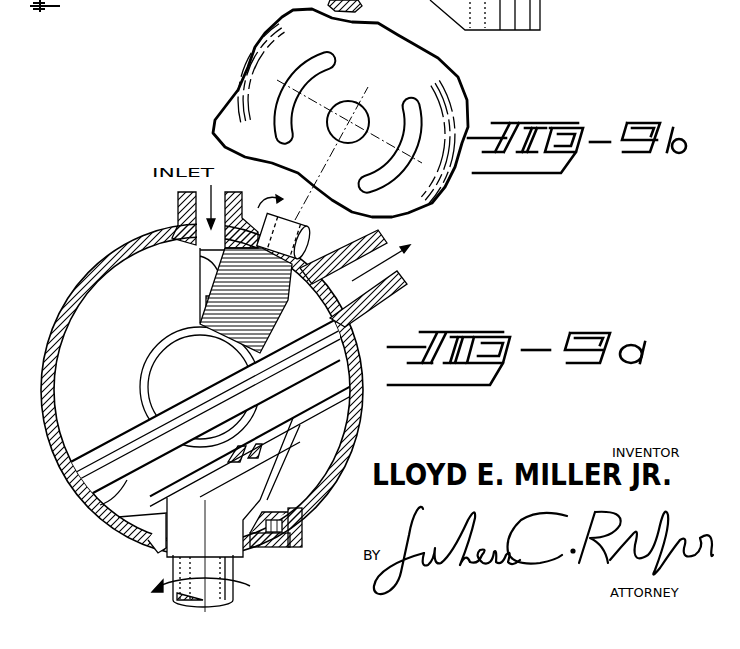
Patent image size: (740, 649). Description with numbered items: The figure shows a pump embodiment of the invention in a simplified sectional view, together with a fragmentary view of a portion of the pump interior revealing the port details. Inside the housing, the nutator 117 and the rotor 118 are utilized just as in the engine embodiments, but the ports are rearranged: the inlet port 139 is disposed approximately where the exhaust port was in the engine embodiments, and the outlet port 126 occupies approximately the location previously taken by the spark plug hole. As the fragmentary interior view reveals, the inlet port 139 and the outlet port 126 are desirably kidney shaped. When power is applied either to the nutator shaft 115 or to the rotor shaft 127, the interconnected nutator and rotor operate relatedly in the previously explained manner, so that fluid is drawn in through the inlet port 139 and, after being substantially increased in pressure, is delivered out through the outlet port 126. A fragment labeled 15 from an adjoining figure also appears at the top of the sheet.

In FIG. 9b, the housing fragment 15 is at (374, 6).
In FIG. 9a, the nutator shaft 115 is at (217, 578).
In FIG. 9a, the nutator 117 is at (100, 505).
In FIG. 9a, the rotor 118 is at (215, 292).
In FIG. 9b, the outlet port 126 is at (430, 191).
In FIG. 9a, the outlet port 126 is at (393, 263).
In FIG. 9a, the rotor shaft 127 is at (312, 216).
In FIG. 9b, the inlet port 139 is at (288, 105).
In FIG. 9a, the inlet port 139 is at (218, 205).